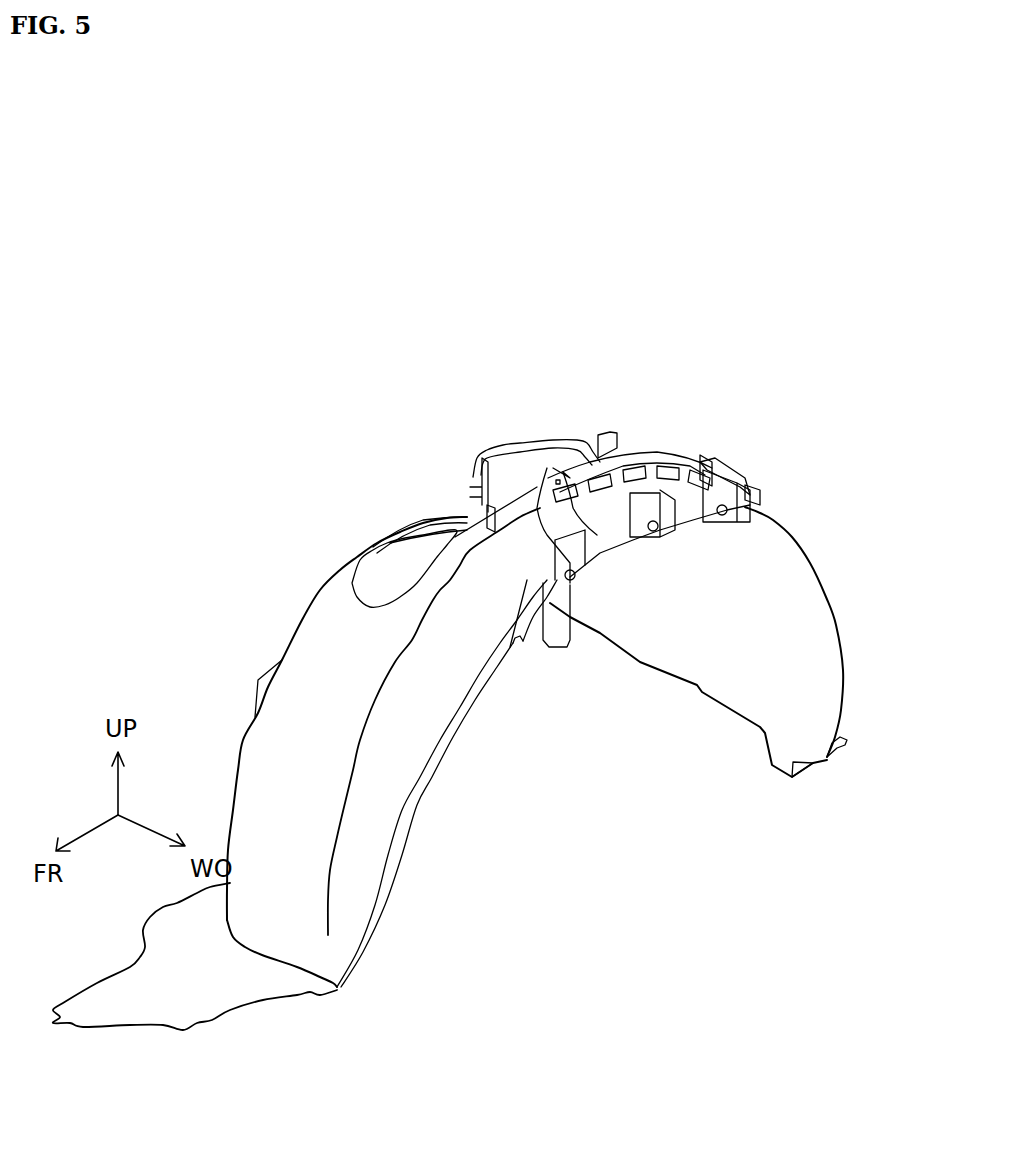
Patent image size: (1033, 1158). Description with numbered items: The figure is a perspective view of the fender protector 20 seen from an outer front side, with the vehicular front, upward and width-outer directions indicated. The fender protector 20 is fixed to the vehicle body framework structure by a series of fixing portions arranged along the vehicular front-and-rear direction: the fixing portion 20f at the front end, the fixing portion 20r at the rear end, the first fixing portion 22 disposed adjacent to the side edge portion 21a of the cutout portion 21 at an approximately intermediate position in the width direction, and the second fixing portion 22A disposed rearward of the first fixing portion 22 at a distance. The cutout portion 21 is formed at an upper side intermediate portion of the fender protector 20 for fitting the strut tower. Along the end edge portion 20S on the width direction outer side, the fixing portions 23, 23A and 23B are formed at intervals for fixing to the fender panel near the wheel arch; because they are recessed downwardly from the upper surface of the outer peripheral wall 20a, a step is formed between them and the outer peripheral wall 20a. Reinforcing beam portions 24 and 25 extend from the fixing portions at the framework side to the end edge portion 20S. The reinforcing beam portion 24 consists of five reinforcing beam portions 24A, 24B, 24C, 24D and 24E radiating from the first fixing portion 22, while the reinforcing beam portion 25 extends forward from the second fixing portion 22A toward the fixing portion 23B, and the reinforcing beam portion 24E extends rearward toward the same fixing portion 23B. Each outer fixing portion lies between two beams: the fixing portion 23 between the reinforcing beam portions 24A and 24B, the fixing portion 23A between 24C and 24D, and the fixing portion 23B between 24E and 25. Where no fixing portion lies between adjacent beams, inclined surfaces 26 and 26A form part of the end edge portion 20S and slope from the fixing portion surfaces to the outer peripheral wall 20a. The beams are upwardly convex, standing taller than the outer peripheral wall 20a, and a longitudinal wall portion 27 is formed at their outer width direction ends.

The fender protector 20 is at (250, 586).
The outer peripheral wall 20a is at (462, 673).
The fixing portion 20f is at (140, 1013).
The fixing portion 20r is at (833, 748).
The end edge portion 20S is at (533, 617).
The cutout portion 21 is at (420, 517).
The side edge portion 21a is at (467, 483).
The first fixing portion 22 is at (517, 443).
The second fixing portion 22A is at (717, 455).
The fixing portion 23 is at (573, 553).
The fixing portion 23A is at (690, 520).
The fixing portion 23B is at (750, 503).
The reinforcing beam portion 24 is at (780, 308).
The reinforcing beam portion 24A is at (545, 485).
The reinforcing beam portion 24B is at (600, 480).
The reinforcing beam portion 24C is at (637, 477).
The reinforcing beam portion 24D is at (677, 487).
The reinforcing beam portion 24E is at (693, 473).
The reinforcing beam portion 25 is at (727, 468).
The inclined surface 26 is at (612, 540).
The inclined surface 26A is at (747, 492).
The longitudinal wall portion 27 is at (722, 520).